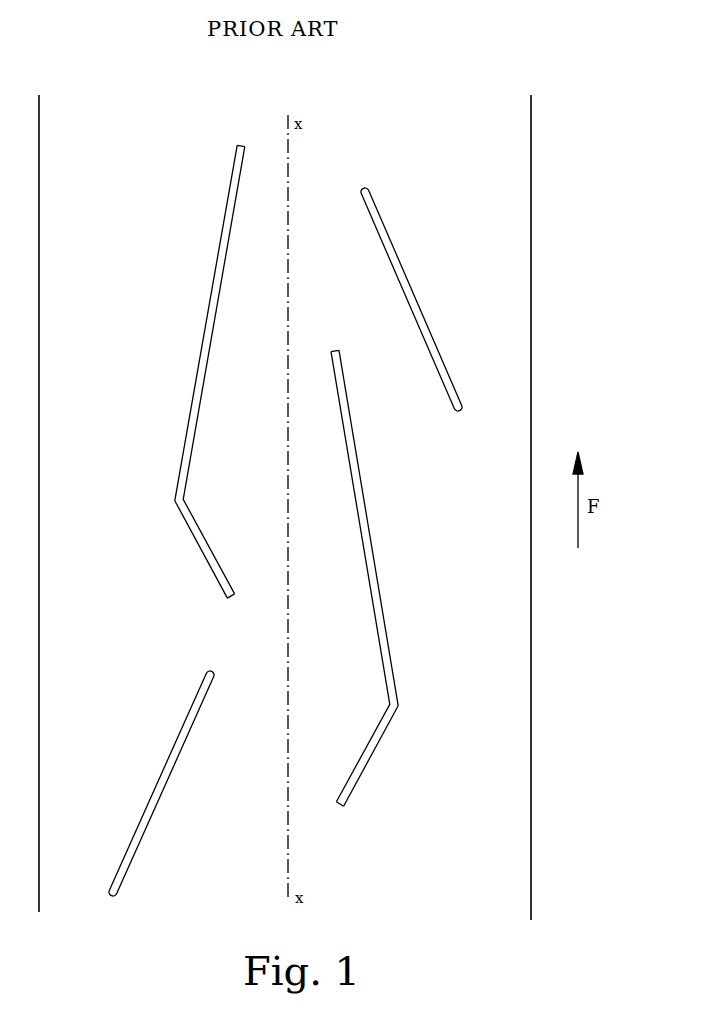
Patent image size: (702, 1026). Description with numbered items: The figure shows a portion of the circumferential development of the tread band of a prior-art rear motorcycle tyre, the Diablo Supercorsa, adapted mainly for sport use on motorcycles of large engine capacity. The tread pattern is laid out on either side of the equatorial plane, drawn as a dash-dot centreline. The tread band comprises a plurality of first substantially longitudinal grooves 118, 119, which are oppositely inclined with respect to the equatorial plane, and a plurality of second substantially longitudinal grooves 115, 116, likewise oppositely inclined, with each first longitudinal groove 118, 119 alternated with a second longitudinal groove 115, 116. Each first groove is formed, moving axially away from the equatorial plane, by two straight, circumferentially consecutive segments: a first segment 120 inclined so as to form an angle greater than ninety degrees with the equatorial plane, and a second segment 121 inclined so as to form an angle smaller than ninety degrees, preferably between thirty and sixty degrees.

The second longitudinal groove 115 is at (427, 309).
The second longitudinal groove 116 is at (177, 767).
The first longitudinal groove 118 is at (382, 585).
The first longitudinal groove 119 is at (184, 424).
The first segment 120 is at (207, 378).
The second segment 121 is at (213, 545).